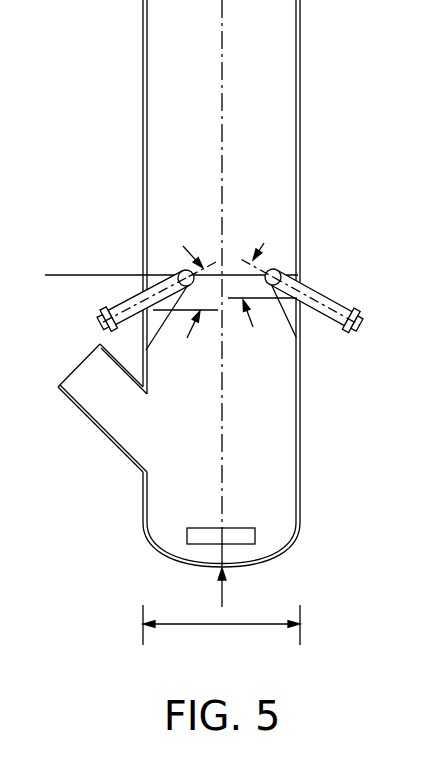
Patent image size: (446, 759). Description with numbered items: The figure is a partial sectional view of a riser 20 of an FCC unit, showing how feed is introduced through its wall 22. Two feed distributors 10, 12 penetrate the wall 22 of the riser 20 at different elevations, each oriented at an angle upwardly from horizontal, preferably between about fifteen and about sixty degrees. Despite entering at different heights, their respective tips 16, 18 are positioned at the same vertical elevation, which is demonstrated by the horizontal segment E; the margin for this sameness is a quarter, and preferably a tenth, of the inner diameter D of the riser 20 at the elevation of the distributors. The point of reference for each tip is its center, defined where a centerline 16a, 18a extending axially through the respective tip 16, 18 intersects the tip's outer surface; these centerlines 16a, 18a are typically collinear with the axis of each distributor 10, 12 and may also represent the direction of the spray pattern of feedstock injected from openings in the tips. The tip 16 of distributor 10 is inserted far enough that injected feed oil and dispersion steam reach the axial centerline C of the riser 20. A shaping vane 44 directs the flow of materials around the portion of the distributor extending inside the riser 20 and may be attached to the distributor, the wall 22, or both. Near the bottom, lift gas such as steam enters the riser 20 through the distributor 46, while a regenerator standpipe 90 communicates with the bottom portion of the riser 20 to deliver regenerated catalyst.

The distributor 10 is at (123, 297).
The distributor 12 is at (332, 290).
The tip 16 is at (187, 270).
The centerline 16a is at (215, 260).
The tip 18 is at (277, 270).
The centerline 18a is at (263, 268).
The riser 20 is at (143, 60).
The wall 22 is at (146, 112).
The shaping vane 44 is at (157, 312).
The distributor 46 is at (187, 534).
The regenerator standpipe 90 is at (104, 433).
The axial centerline C is at (222, 427).
The inner diameter D is at (221, 614).
The segment E is at (93, 275).